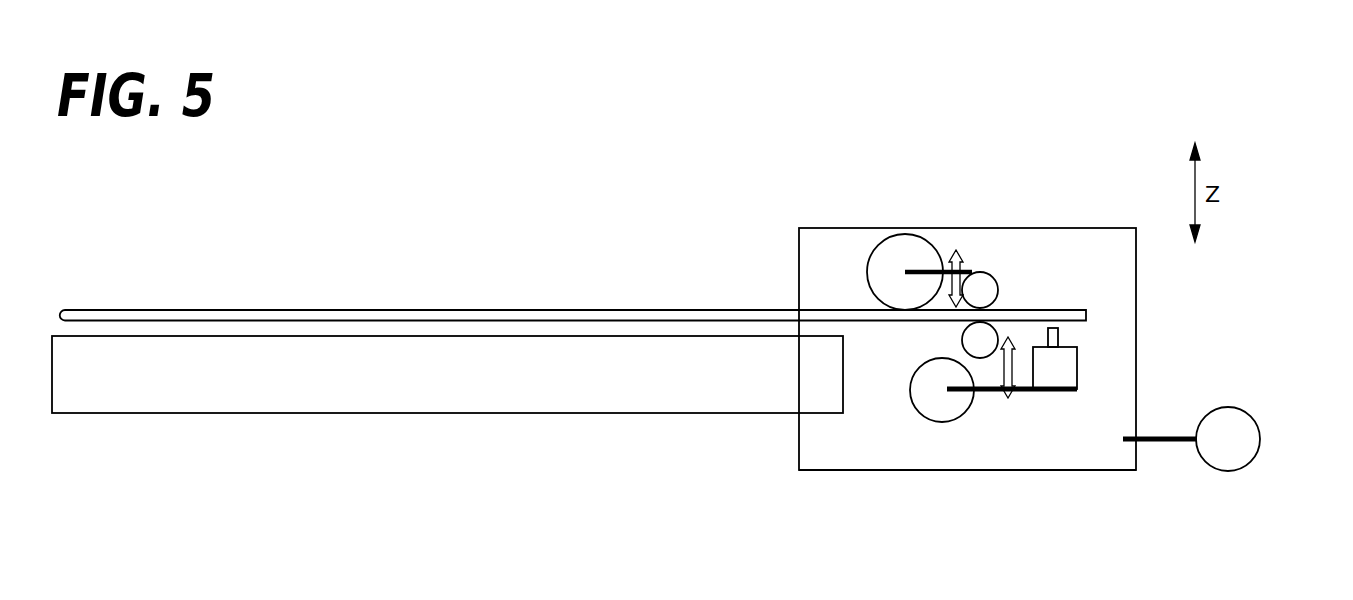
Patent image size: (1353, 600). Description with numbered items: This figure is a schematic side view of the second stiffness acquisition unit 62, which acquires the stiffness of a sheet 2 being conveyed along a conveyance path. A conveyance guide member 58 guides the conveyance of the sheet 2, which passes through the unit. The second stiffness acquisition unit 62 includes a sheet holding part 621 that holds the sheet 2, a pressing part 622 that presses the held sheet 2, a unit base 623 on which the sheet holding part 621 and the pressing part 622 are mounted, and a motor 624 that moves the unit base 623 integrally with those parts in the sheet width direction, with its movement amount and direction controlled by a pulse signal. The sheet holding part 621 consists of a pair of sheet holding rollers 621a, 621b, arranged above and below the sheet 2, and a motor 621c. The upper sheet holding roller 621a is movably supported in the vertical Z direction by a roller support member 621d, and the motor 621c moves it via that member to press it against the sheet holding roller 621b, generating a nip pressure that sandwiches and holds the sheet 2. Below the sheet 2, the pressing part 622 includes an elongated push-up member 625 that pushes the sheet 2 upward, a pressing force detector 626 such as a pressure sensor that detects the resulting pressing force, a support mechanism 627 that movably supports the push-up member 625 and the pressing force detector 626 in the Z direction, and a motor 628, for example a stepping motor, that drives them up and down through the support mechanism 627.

The sheet 2 is at (588, 310).
The conveyance guide member 58 is at (508, 414).
The second stiffness acquisition unit 62 is at (891, 123).
The sheet holding part 621 is at (982, 240).
The sheet holding roller 621a is at (998, 290).
The sheet holding roller 621b is at (962, 342).
The motor 621c is at (905, 234).
The roller support member 621d is at (951, 266).
The pressing part 622 is at (1015, 428).
The unit base 623 is at (840, 471).
The motor 624 is at (1262, 441).
The push-up member 625 is at (1060, 337).
The pressing force detector 626 is at (1078, 370).
The support mechanism 627 is at (993, 394).
The motor 628 is at (942, 423).